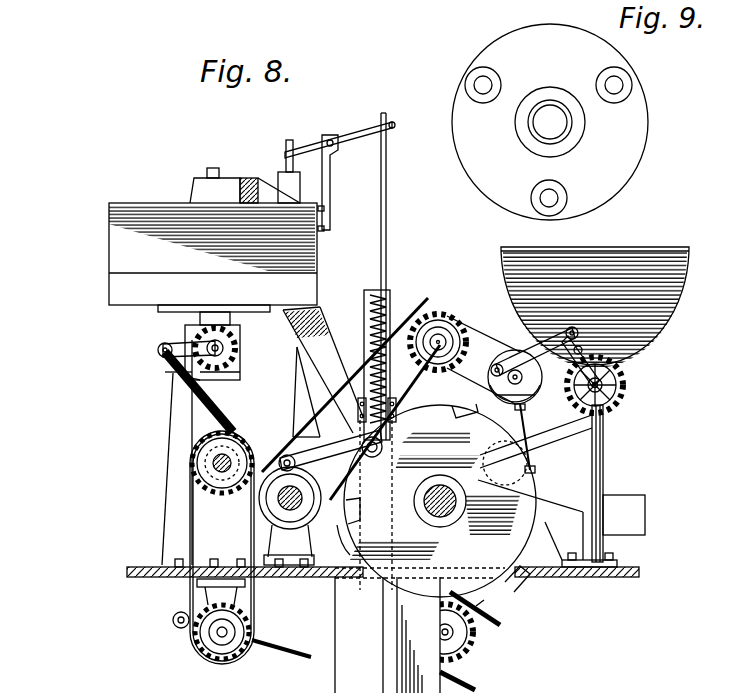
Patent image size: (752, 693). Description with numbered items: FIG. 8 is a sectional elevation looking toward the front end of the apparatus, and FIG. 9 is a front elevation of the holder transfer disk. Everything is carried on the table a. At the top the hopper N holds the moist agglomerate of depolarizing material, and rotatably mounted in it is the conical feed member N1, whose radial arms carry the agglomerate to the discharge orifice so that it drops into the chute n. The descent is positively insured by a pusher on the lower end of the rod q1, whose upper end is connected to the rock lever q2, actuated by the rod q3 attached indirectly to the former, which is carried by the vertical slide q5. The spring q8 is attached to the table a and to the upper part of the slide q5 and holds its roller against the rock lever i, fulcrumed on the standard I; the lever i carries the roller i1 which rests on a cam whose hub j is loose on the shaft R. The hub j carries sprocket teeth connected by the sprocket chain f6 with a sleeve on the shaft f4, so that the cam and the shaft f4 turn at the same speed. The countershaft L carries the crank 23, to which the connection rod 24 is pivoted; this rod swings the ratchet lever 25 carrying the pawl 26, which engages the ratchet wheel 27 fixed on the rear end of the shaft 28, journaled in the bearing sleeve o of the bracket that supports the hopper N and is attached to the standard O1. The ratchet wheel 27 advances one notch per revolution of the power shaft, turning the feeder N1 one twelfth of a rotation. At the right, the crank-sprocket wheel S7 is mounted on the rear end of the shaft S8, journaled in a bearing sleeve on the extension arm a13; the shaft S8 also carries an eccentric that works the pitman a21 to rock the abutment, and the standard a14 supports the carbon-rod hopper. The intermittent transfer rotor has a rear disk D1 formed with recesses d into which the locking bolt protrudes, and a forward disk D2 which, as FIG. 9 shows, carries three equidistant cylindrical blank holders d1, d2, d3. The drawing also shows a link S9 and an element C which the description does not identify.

In FIG. 8, the hopper N is at (191, 257).
In FIG. 8, the conical feed member N1 is at (185, 190).
In FIG. 8, the rod q1 is at (290, 128).
In FIG. 8, the rock lever q2 is at (352, 122).
In FIG. 8, the rod q3 is at (386, 168).
In FIG. 8, the vertical slide q5 is at (383, 292).
In FIG. 8, the spring q8 is at (428, 300).
In FIG. 8, the chute n is at (323, 372).
In FIG. 8, the shaft 28 is at (235, 348).
In FIG. 8, the bearing sleeve o is at (230, 318).
In FIG. 8, the ratchet wheel 27 is at (240, 372).
In FIG. 8, the ratchet lever 25 is at (165, 343).
In FIG. 8, the pawl 26 is at (168, 358).
In FIG. 8, the connection rod 24 is at (188, 385).
In FIG. 8, the crank 23 is at (240, 436).
In FIG. 8, the standard O1 is at (178, 422).
In FIG. 8, the countershaft L is at (210, 463).
In FIG. 8, the standard I is at (240, 530).
In FIG. 8, the intermittently rotatable shaft R is at (278, 503).
In FIG. 8, the rock lever i is at (331, 450).
In FIG. 8, the roller i1 is at (285, 455).
In FIG. 8, the rotatable shaft f4 is at (440, 342).
In FIG. 8, the extension arm a13 is at (483, 356).
In FIG. 8, the link S9 is at (512, 322).
In FIG. 8, the shaft S8 is at (525, 411).
In FIG. 8, the crank-sprocket wheel S7 is at (584, 377).
In FIG. 8, the rear disk D1 is at (435, 500).
In FIG. 8, the shaft C is at (418, 498).
In FIG. 8, the sprocket chain f6 is at (408, 440).
In FIG. 8, the hub j is at (335, 542).
In FIG. 8, the recess d is at (346, 528).
In FIG. 8, the standard a14 is at (603, 468).
In FIG. 8, the pitman a21 is at (565, 440).
In FIG. 8, the table a is at (127, 571).
In FIG. 9, the forward disk D2 is at (550, 122).
In FIG. 9, the blank holder d1 is at (624, 85).
In FIG. 9, the blank holder d2 is at (470, 85).
In FIG. 9, the blank holder d3 is at (556, 198).